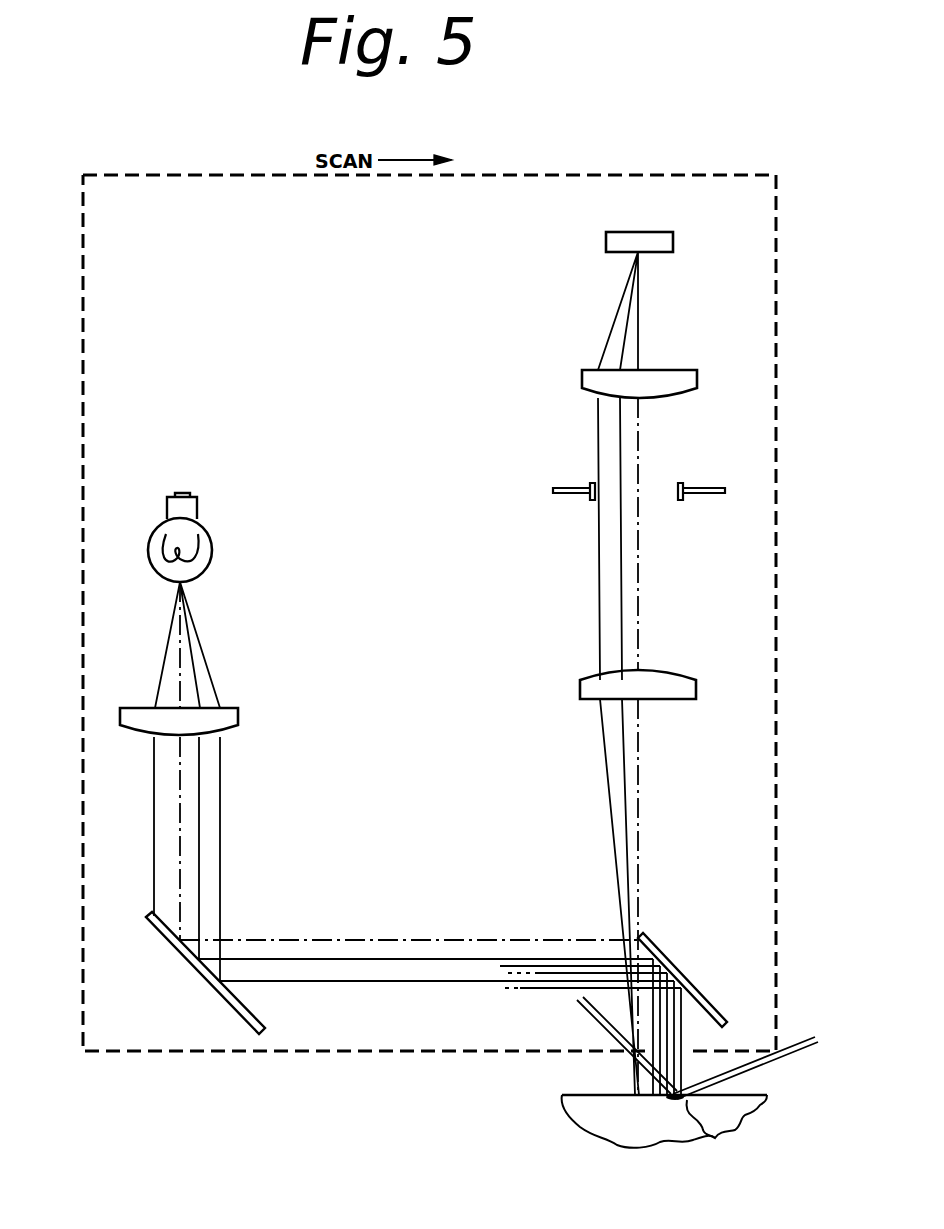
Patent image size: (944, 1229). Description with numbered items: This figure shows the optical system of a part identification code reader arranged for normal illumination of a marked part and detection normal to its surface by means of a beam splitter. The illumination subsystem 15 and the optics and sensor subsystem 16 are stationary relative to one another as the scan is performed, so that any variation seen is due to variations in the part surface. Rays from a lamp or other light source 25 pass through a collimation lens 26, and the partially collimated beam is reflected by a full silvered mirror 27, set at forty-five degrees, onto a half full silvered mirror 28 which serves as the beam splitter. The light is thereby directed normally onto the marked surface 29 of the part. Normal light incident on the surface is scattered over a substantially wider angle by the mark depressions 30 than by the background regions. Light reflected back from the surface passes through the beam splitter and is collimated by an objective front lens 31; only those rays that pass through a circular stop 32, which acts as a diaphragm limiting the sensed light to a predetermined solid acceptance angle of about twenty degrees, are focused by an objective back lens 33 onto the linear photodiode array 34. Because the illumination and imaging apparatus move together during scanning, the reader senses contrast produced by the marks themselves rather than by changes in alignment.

The illumination subsystem 15 is at (263, 522).
The optics and sensor subsystem 16 is at (556, 430).
The light source 25 is at (213, 540).
The collimation lens 26 is at (236, 708).
The full silvered mirror 27 is at (183, 957).
The half full silvered mirror 28 is at (705, 1000).
The marked surface 29 is at (566, 1093).
The mark depressions 30 is at (715, 1138).
The objective front lens 31 is at (582, 678).
The circular stop 32 is at (553, 488).
The objective back lens 33 is at (679, 370).
The linear photodiode array 34 is at (606, 242).